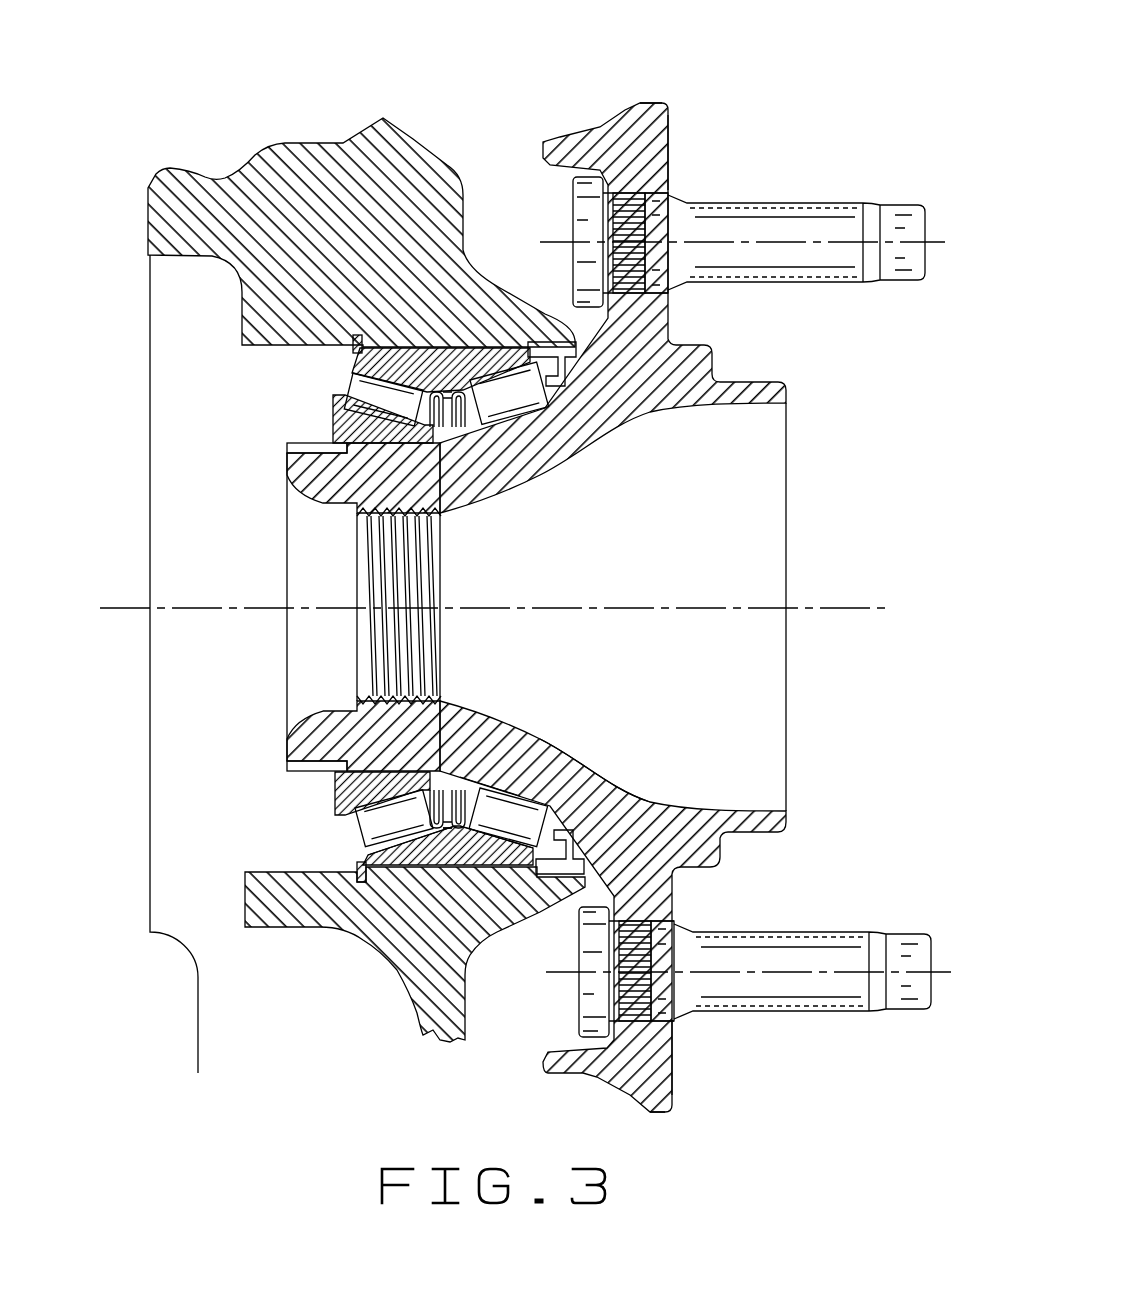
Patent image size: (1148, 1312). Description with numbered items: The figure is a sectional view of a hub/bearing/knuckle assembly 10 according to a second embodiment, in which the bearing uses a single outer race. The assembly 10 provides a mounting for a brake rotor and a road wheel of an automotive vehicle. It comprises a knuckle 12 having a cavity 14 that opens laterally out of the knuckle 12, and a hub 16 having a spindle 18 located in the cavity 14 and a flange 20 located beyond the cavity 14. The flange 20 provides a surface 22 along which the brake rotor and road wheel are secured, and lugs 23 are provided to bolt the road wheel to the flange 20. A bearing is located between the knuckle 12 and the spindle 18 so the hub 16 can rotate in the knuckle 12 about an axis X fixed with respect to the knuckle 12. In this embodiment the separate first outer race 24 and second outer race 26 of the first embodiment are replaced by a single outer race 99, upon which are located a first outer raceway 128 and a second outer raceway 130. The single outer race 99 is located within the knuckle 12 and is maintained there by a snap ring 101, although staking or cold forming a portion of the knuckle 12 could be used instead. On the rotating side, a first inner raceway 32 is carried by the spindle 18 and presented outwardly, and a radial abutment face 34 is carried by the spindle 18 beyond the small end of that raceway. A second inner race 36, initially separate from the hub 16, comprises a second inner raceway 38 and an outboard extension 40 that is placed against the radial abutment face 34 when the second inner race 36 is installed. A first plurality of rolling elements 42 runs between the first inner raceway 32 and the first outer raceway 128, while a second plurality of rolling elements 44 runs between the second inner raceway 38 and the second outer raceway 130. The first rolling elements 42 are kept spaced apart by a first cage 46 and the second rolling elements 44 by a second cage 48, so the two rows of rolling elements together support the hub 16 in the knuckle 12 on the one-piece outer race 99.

The assembly 10 is at (240, 121).
The knuckle 12 is at (339, 125).
The cavity 14 is at (250, 704).
The hub 16 is at (672, 94).
The spindle 18 is at (287, 456).
The flange 20 is at (647, 100).
The surface 22 is at (674, 158).
The lugs 23 is at (926, 200).
The first outer race 24 is at (531, 882).
The second outer race 26 is at (420, 852).
The first inner raceway 32 is at (505, 808).
The radial abutment face 34 is at (416, 446).
The second inner race 36 is at (338, 806).
The second inner raceway 38 is at (400, 830).
The outboard extension 40 is at (479, 770).
The first plurality of rolling elements 42 is at (562, 757).
The second plurality of rolling elements 44 is at (410, 836).
The first cage 46 is at (441, 850).
The second cage 48 is at (446, 836).
The single outer race 99 is at (468, 350).
The snap ring 101 is at (352, 348).
The first outer raceway 128 is at (486, 842).
The second outer raceway 130 is at (359, 883).